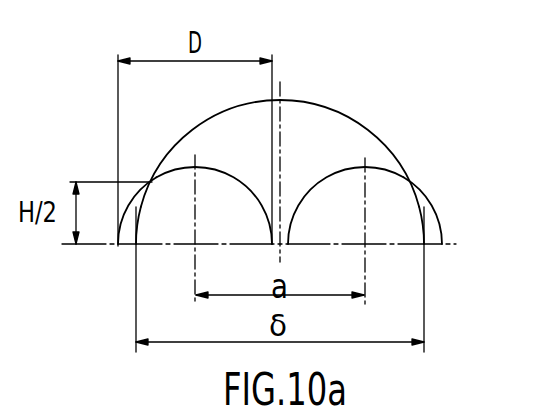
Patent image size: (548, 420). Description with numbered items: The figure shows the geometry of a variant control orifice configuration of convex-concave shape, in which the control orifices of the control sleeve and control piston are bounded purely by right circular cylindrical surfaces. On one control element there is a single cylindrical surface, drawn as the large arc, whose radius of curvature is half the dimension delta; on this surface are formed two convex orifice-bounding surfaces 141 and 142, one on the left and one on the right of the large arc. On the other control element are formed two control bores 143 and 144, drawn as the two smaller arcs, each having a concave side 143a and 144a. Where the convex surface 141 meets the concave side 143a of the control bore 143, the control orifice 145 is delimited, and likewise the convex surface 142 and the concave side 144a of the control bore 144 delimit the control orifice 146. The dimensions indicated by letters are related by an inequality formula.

The convex orifice-bounding surface 141 is at (145, 213).
The convex orifice-bounding surface 142 is at (425, 209).
The control bore 143 is at (174, 225).
The concave side 143a is at (145, 183).
The control bore 144 is at (386, 190).
The concave side 144a is at (436, 223).
The control orifice 145 is at (128, 237).
The control orifice 146 is at (429, 235).